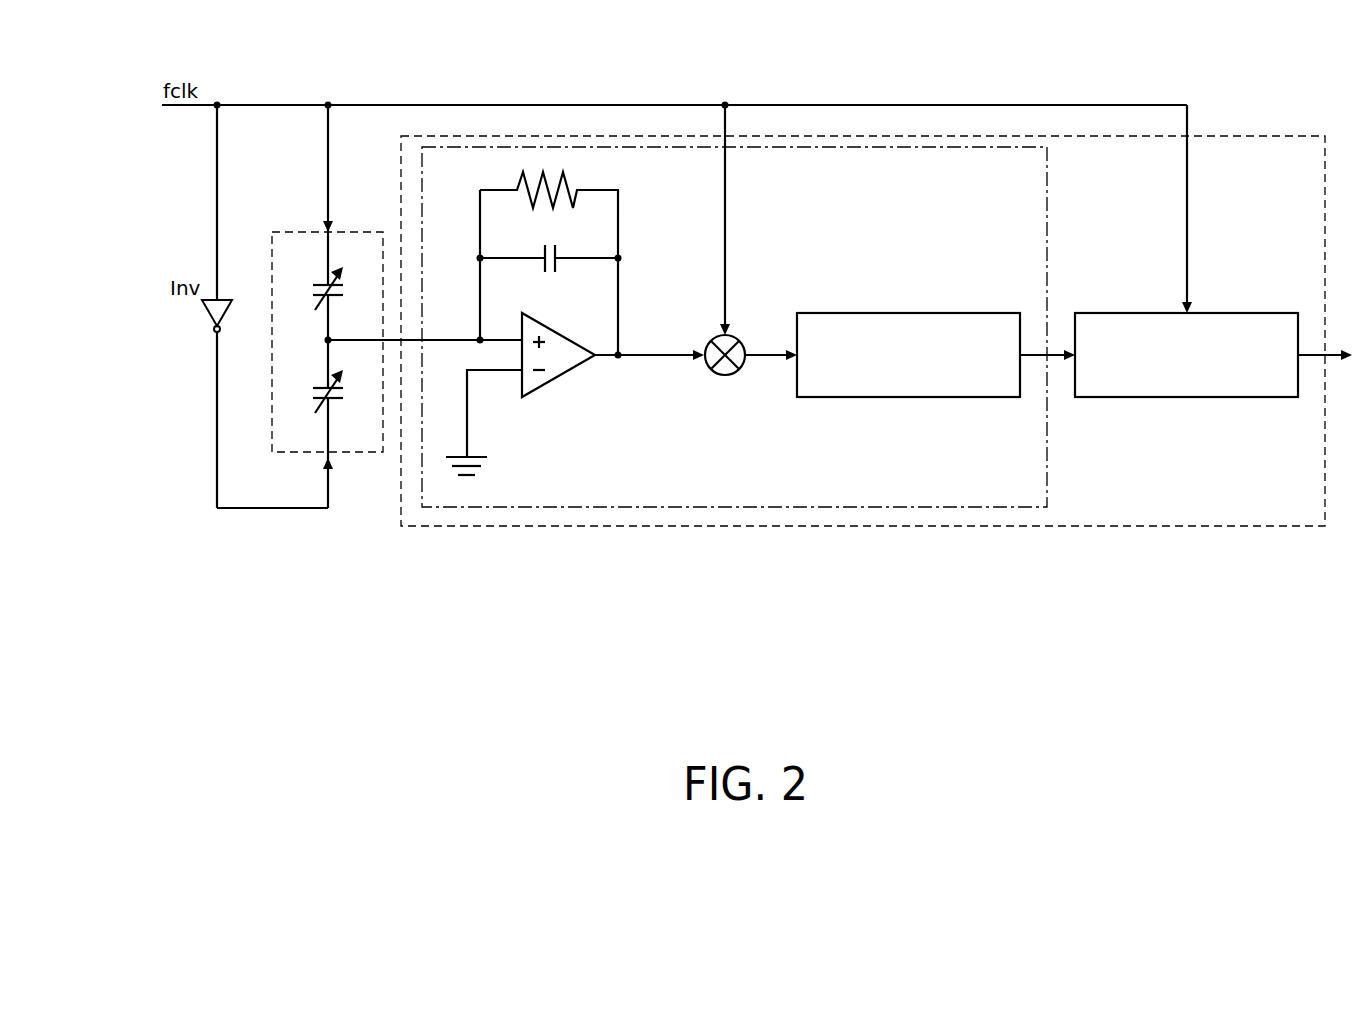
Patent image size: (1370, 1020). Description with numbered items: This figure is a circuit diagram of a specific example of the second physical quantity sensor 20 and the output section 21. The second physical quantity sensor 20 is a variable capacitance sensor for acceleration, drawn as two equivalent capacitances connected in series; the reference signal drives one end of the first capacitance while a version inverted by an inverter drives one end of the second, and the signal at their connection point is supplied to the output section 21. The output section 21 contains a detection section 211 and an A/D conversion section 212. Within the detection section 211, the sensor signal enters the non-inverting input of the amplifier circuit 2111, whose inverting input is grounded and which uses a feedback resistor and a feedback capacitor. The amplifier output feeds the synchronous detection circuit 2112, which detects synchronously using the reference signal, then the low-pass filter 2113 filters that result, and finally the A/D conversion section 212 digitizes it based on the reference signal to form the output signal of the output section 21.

The second physical quantity sensor 20 is at (283, 230).
The output section 21 is at (1297, 133).
The detection section 211 is at (1050, 226).
The amplifier circuit 2111 is at (558, 378).
The synchronous detection circuit 2112 is at (725, 377).
The low-pass filter 2113 is at (960, 398).
The A/D conversion section 212 is at (1270, 312).